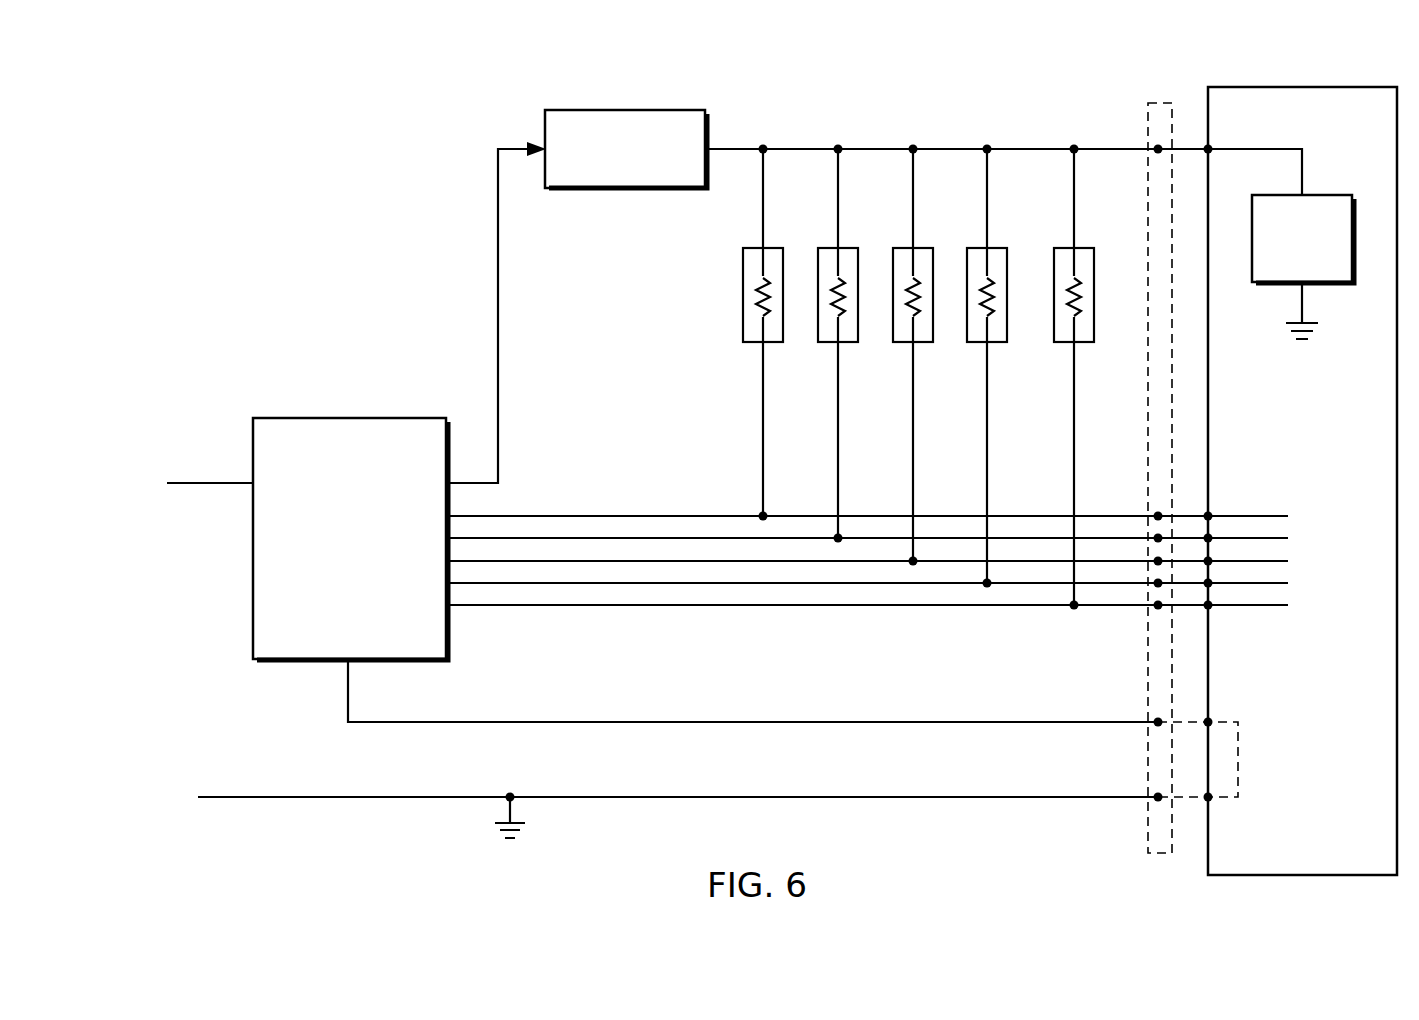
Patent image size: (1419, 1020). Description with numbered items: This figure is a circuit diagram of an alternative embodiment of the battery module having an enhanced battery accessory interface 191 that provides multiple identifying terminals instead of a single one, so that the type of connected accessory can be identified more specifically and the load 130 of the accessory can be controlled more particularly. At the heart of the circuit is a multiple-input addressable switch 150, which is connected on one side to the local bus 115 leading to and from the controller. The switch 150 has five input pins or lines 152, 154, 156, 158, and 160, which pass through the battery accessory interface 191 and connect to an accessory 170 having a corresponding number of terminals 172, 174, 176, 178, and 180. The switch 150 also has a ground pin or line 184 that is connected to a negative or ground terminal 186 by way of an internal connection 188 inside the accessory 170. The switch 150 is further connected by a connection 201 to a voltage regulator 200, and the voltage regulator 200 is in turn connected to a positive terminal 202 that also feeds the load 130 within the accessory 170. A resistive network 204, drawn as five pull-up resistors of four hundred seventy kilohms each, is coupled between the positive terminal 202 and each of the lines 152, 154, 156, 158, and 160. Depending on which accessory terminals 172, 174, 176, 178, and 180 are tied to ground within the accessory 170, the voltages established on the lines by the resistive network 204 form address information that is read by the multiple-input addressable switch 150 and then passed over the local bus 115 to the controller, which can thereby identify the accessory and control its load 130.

The local bus 115 is at (183, 483).
The load 130 is at (1340, 285).
The multiple-input addressable switch 150 is at (348, 418).
The input line 152 is at (1110, 516).
The input line 154 is at (1046, 538).
The input line 156 is at (946, 561).
The input line 158 is at (1033, 583).
The input line 160 is at (1092, 605).
The accessory 170 is at (1385, 126).
The terminal 172 is at (1226, 516).
The terminal 174 is at (1273, 538).
The terminal 176 is at (1270, 561).
The terminal 178 is at (1273, 583).
The terminal 180 is at (1226, 605).
The ground line 184 is at (885, 722).
The ground terminal 186 is at (905, 797).
The internal connection 188 is at (1238, 760).
The battery accessory interface 191 is at (1148, 209).
The voltage regulator 200 is at (627, 192).
The connection 201 is at (498, 318).
The positive terminal 202 is at (1110, 147).
The resistive network 204 is at (742, 138).